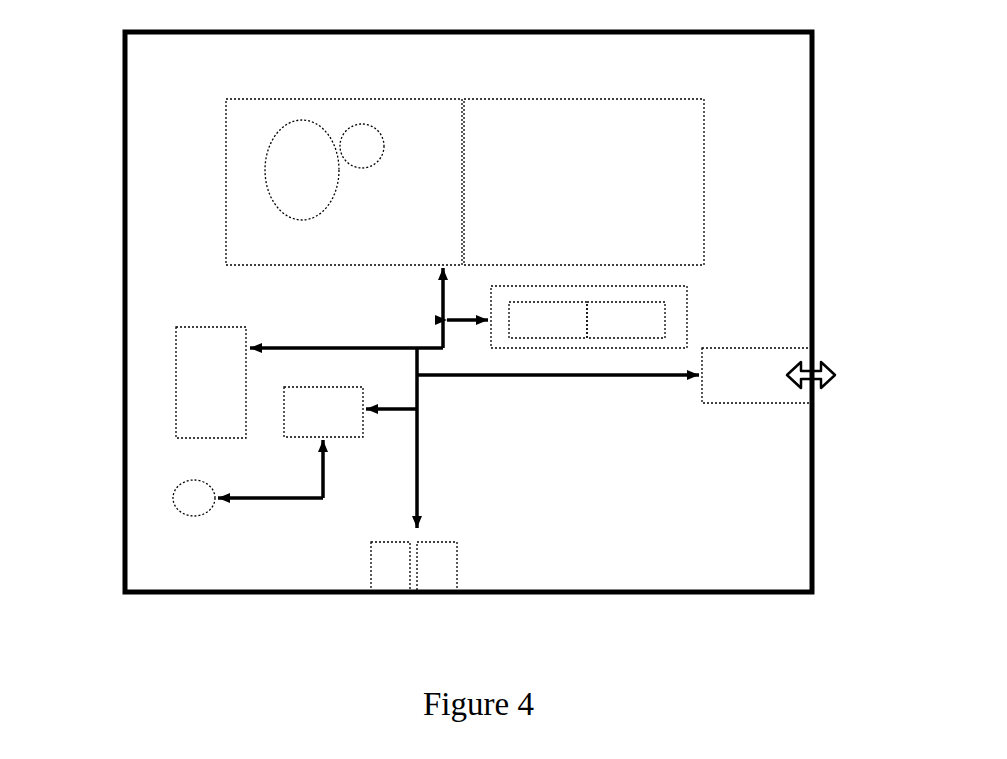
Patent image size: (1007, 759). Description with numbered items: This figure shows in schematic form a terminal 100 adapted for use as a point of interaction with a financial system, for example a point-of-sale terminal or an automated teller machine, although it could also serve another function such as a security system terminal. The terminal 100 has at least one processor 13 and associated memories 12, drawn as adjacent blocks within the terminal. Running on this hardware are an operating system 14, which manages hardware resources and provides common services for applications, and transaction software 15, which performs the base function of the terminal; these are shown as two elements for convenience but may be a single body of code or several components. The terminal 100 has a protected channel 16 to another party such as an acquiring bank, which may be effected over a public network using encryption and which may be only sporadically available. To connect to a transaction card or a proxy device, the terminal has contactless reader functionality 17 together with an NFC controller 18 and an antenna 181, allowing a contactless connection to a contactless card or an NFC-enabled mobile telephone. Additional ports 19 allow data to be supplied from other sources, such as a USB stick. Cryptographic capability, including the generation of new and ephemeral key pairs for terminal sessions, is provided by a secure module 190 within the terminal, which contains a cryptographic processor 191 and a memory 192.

The terminal 100 is at (790, 65).
The memories 12 is at (248, 119).
The processor 13 is at (677, 128).
The operating system 14 is at (268, 165).
The transaction software 15 is at (382, 130).
The protected channel 16 is at (793, 402).
The contactless reader functionality 17 is at (175, 362).
The NFC controller 18 is at (355, 440).
The antenna 181 is at (172, 498).
The additional ports 19 is at (418, 603).
The secure module 190 is at (690, 308).
The cryptographic processor 191 is at (547, 337).
The memory 192 is at (625, 337).